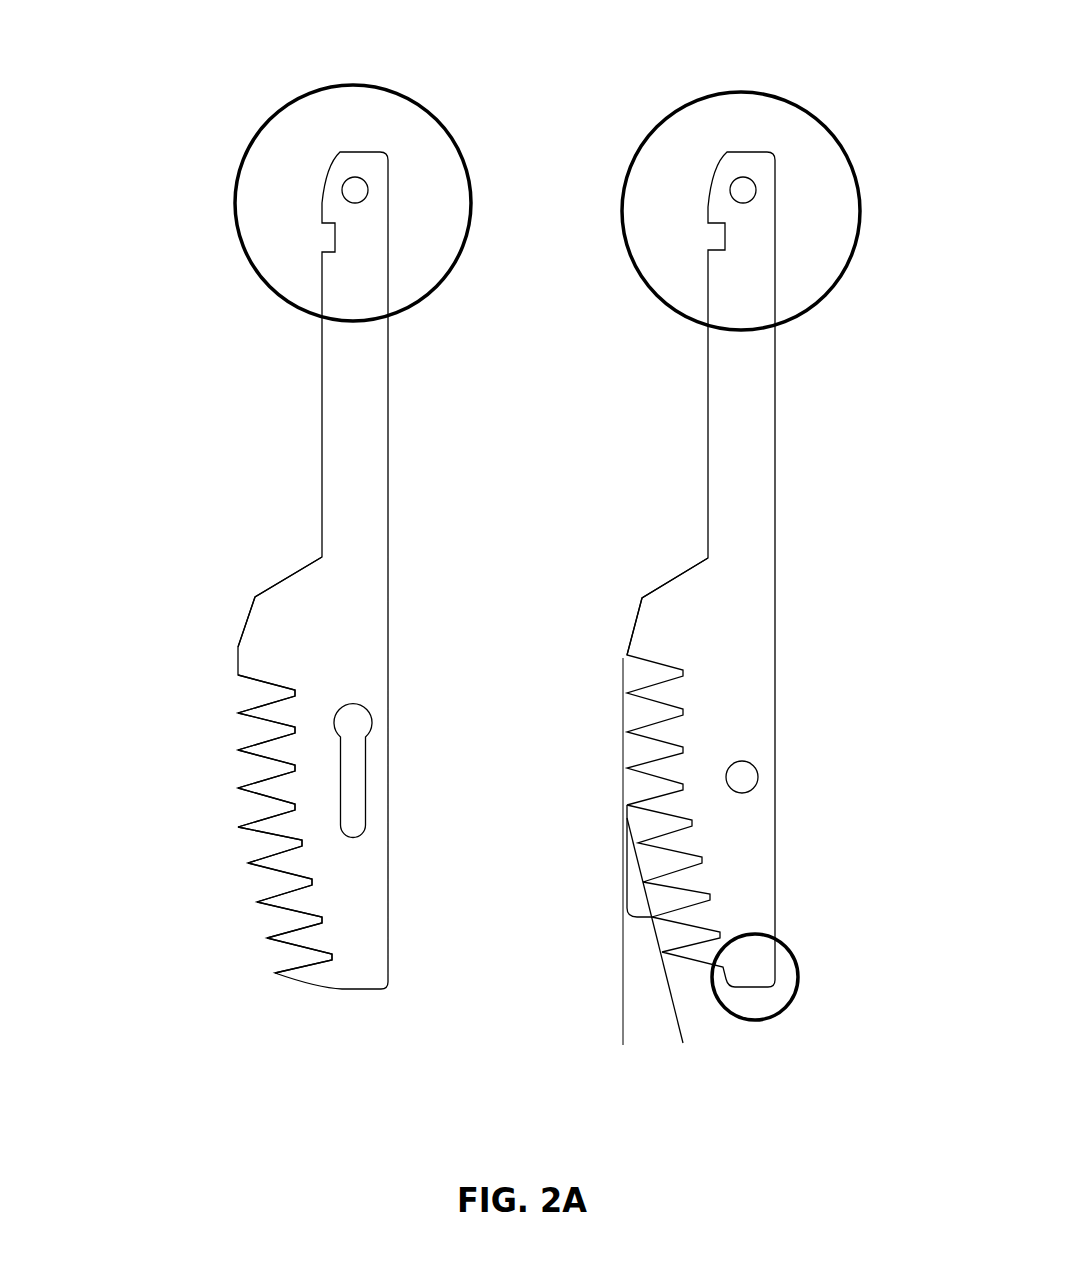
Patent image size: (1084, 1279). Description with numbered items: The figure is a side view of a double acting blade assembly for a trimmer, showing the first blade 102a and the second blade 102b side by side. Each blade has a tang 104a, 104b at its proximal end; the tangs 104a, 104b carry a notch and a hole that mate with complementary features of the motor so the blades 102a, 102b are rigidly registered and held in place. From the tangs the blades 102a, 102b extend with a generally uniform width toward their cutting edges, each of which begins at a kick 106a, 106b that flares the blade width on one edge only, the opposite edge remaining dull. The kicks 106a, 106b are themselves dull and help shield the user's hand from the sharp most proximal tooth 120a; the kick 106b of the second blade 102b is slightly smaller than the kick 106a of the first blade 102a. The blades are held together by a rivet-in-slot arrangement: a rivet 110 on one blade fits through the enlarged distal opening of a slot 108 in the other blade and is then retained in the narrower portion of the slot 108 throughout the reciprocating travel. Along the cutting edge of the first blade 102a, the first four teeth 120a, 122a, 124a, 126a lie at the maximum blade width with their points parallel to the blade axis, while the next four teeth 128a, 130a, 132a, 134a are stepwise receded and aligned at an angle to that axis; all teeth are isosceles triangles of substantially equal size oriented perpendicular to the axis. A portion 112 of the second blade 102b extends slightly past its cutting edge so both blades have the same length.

The first blade 102a is at (217, 393).
The second blade 102b is at (620, 415).
The tang 104a is at (430, 110).
The tang 104b is at (810, 110).
The kick 106a is at (275, 603).
The kick 106b is at (670, 610).
The slot 108 is at (352, 785).
The rivet 110 is at (742, 777).
The portion 112 is at (795, 957).
The tooth 120a is at (262, 706).
The tooth 122a is at (262, 742).
The tooth 124a is at (262, 781).
The tooth 126a is at (262, 830).
The tooth 128a is at (270, 864).
The tooth 130a is at (282, 899).
The tooth 132a is at (293, 935).
The tooth 134a is at (303, 972).